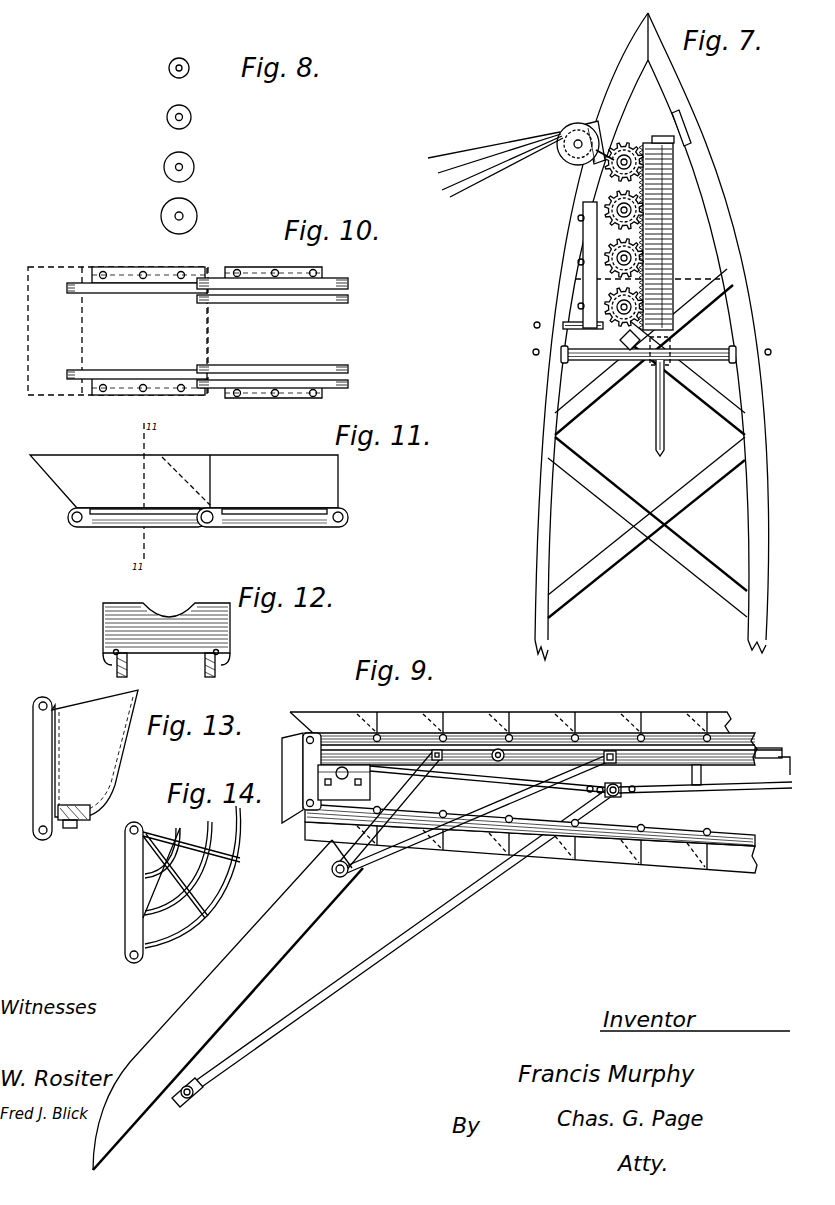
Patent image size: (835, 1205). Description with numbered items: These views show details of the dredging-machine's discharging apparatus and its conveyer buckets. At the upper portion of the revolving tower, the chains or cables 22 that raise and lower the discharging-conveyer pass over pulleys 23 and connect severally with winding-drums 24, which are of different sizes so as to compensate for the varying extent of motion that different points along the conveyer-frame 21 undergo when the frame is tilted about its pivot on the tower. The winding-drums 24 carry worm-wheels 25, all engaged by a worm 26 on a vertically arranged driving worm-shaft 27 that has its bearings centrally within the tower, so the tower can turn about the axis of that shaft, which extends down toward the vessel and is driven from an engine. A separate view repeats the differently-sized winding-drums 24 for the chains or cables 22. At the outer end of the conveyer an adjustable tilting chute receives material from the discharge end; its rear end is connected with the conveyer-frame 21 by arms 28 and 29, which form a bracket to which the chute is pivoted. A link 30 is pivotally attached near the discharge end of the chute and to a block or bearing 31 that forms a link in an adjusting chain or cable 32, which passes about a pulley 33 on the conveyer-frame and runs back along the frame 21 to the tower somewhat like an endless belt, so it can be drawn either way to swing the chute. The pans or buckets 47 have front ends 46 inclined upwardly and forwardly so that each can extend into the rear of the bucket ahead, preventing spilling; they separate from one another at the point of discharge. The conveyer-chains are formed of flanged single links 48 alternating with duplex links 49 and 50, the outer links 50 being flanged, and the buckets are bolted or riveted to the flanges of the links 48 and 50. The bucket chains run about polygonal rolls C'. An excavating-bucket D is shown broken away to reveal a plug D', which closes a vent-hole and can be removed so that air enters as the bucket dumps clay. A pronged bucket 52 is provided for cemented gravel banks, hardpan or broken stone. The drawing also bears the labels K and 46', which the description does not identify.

In FIG. 9, the conveyer-frame 21 is at (735, 758).
In FIG. 7, the chains or cables 22 is at (483, 170).
In FIG. 7, the pulleys 23 is at (585, 132).
In FIG. 8, the winding-drums 24 is at (192, 73).
In FIG. 7, the worm-wheels 25 is at (631, 145).
In FIG. 7, the worm 26 is at (675, 258).
In FIG. 7, the driving worm-shaft 27 is at (656, 426).
In FIG. 9, the arm 28 is at (332, 840).
In FIG. 9, the arm 29 is at (396, 852).
In FIG. 9, the link 30 is at (358, 974).
In FIG. 9, the block or bearing 31 is at (620, 796).
In FIG. 9, the adjusting chain or cable 32 is at (783, 768).
In FIG. 9, the pulley 33 is at (508, 734).
In FIG. 9, the front ends 46 is at (282, 722).
In FIG. 11, the end section 46' is at (33, 482).
In FIG. 11, the pans or buckets 47 is at (184, 471).
In FIG. 12, the pans or buckets 47 is at (166, 624).
In FIG. 9, the pans or buckets 47 is at (523, 791).
In FIG. 10, the flanged single links 48 is at (137, 331).
In FIG. 11, the flanged single links 48 is at (137, 528).
In FIG. 12, the flanged single links 48 is at (166, 668).
In FIG. 10, the duplex links 49 is at (272, 333).
In FIG. 10, the outer duplex links 50 is at (207, 332).
In FIG. 11, the outer duplex links 50 is at (272, 528).
In FIG. 9, the bucket 52 is at (745, 790).
In FIG. 14, the bucket 52 is at (183, 884).
In FIG. 7, the knife blade K is at (540, 395).
In FIG. 9, the knife blade K is at (228, 1005).
In FIG. 13, the excavating-bucket D is at (85, 765).
In FIG. 13, the plug D' is at (74, 834).
In FIG. 9, the polygonal rolls C' is at (356, 782).